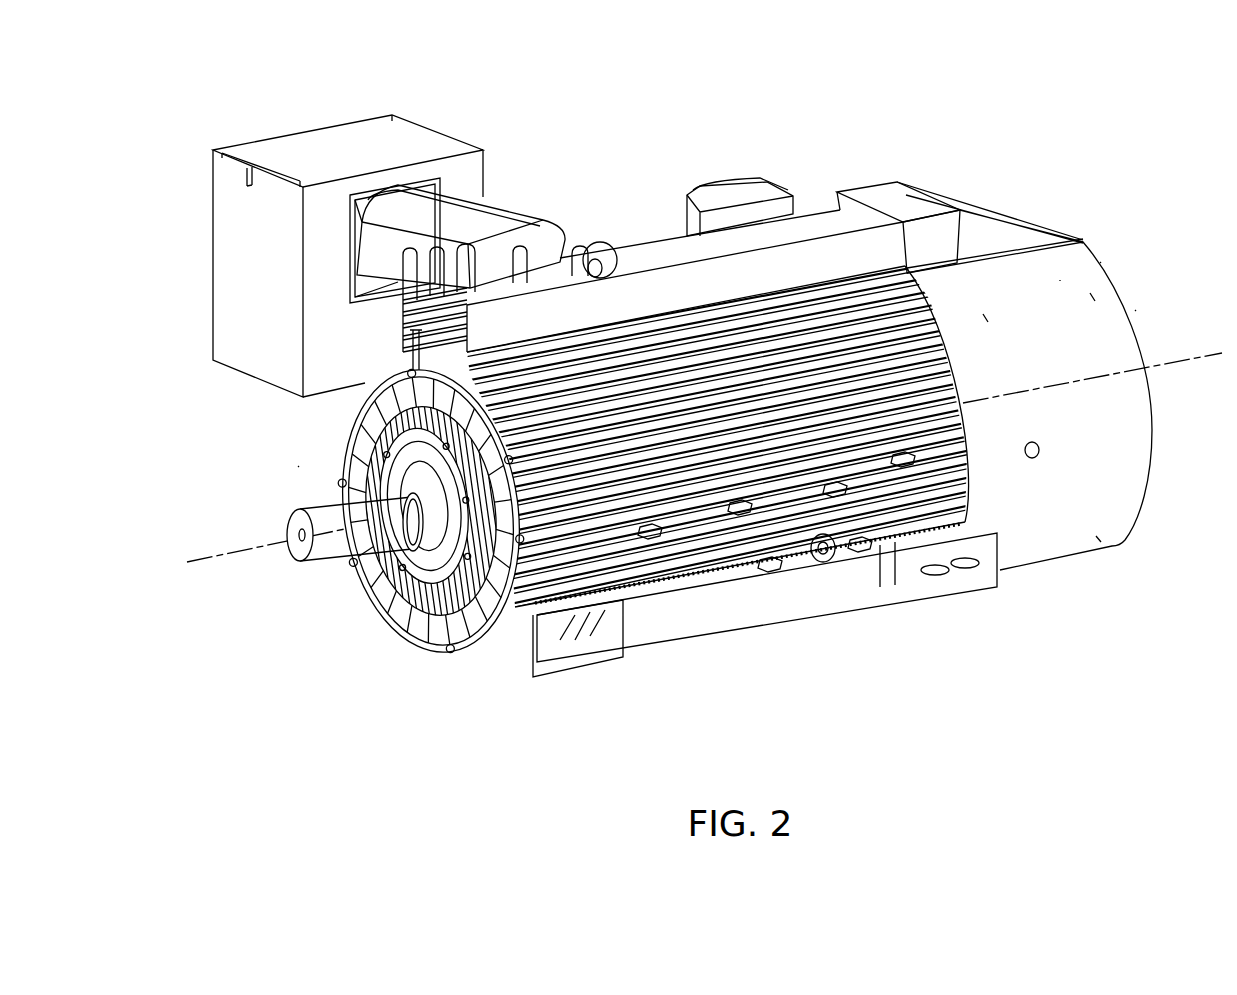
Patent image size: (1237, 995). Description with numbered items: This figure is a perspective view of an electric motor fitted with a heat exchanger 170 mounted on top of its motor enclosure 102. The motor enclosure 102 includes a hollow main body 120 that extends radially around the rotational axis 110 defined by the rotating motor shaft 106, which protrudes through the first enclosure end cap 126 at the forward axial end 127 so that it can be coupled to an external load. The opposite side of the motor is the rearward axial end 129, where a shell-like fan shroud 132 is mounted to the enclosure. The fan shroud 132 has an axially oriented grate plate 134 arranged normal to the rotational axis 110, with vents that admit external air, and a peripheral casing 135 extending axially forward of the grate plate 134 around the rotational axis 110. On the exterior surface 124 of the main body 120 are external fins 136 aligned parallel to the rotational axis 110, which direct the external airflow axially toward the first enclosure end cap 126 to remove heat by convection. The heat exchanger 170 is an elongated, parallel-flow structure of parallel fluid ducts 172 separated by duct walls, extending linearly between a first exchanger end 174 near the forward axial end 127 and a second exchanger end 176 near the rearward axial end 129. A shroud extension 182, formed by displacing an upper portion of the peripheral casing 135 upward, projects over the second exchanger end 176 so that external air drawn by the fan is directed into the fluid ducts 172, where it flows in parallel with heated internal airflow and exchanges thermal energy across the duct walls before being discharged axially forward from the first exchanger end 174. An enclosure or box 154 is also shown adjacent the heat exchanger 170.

The motor enclosure 102 is at (700, 607).
The motor shaft 106 is at (338, 537).
The rotational axis 110 is at (257, 560).
The hollow main body 120 is at (720, 373).
The exterior surface 124 is at (713, 296).
The first enclosure end cap 126 is at (382, 590).
The forward axial end 127 is at (285, 470).
The rearward axial end 129 is at (1138, 310).
The fan shroud 132 is at (1042, 385).
The grate plate 134 is at (1100, 264).
The peripheral casing 135 is at (1040, 272).
The external fins 136 is at (837, 503).
The terminal box 154 is at (372, 130).
The heat exchanger 170 is at (733, 236).
The parallel fluid ducts 172 is at (408, 320).
The first exchanger end 174 is at (540, 308).
The second exchanger end 176 is at (856, 215).
The shroud extension 182 is at (907, 200).